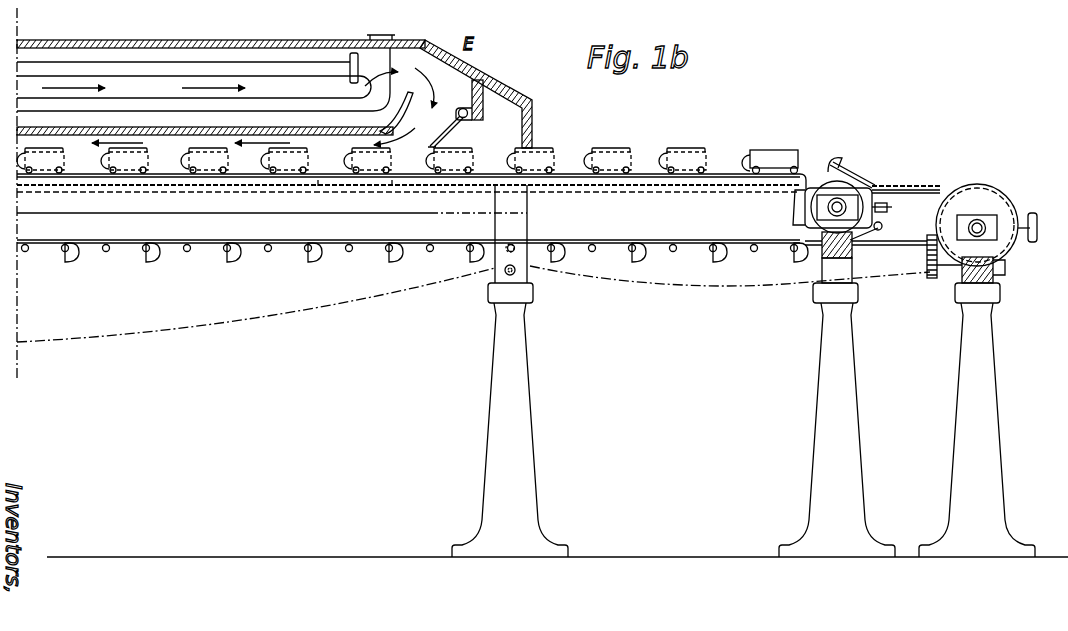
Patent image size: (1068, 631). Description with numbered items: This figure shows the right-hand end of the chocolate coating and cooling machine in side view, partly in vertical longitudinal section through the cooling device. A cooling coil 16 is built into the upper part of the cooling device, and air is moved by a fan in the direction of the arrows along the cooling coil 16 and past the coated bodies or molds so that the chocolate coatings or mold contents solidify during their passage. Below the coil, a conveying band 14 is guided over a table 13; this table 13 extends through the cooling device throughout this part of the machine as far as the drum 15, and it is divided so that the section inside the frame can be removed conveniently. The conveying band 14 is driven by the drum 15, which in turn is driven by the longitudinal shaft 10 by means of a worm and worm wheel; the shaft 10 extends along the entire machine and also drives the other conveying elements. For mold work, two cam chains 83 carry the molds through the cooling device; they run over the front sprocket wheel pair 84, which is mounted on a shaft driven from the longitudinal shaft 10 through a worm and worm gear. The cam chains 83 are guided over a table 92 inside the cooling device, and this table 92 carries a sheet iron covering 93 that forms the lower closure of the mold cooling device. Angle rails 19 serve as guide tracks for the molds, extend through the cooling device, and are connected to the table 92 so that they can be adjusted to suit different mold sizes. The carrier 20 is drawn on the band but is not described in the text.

The longitudinal shaft 10 is at (343, 241).
The table 13 is at (162, 192).
The conveying band 14 is at (243, 186).
The drum 15 is at (1004, 203).
The cooling coil 16 is at (292, 92).
The angle rails 19 is at (480, 152).
The carrier 20 is at (596, 148).
The cam chains 83 is at (752, 154).
The front sprocket wheel pair 84 is at (793, 206).
The table 92 is at (328, 181).
The sheet iron covering 93 is at (392, 179).